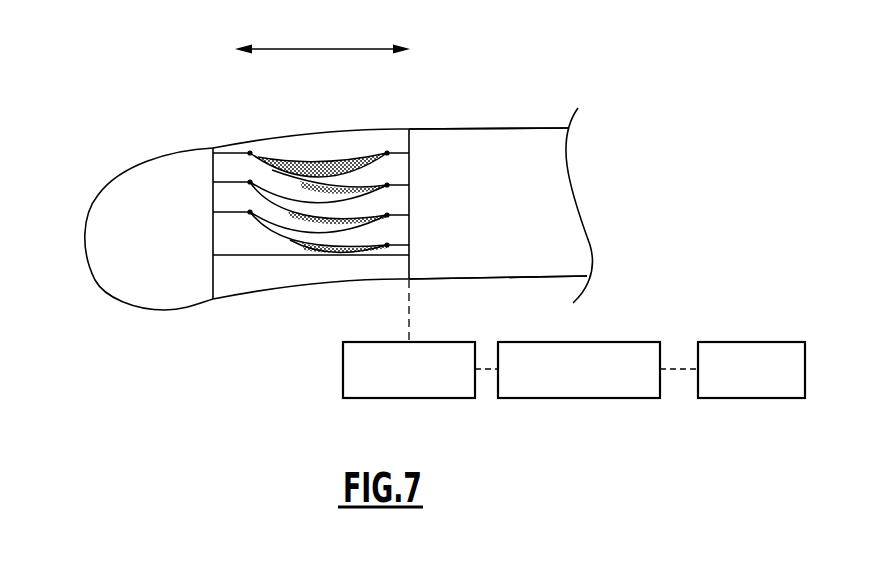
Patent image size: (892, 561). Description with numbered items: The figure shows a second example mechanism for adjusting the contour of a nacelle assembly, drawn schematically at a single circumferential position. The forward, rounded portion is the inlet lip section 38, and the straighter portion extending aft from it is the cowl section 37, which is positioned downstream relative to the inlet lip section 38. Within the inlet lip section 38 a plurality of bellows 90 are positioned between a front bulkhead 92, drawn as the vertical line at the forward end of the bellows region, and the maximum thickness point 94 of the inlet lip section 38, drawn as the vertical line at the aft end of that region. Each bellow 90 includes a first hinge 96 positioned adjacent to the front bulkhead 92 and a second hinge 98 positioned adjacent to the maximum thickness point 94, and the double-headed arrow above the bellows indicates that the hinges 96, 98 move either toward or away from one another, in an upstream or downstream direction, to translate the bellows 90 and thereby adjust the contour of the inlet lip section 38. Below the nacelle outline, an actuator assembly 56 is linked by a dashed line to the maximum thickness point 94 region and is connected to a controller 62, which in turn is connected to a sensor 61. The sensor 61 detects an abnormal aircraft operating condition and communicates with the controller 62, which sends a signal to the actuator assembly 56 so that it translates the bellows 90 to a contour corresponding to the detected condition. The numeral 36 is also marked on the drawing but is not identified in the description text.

The airfoil 36 is at (508, 52).
The cowl section 37 is at (503, 155).
The inlet lip section 38 is at (70, 238).
The bellows 90 is at (320, 132).
The front bulkhead 92 is at (210, 142).
The maximum thickness point 94 is at (412, 112).
The first hinge 96 is at (251, 150).
The second hinge 98 is at (388, 150).
The actuator assembly 56 is at (408, 398).
The controller 62 is at (595, 398).
The sensor 61 is at (768, 398).